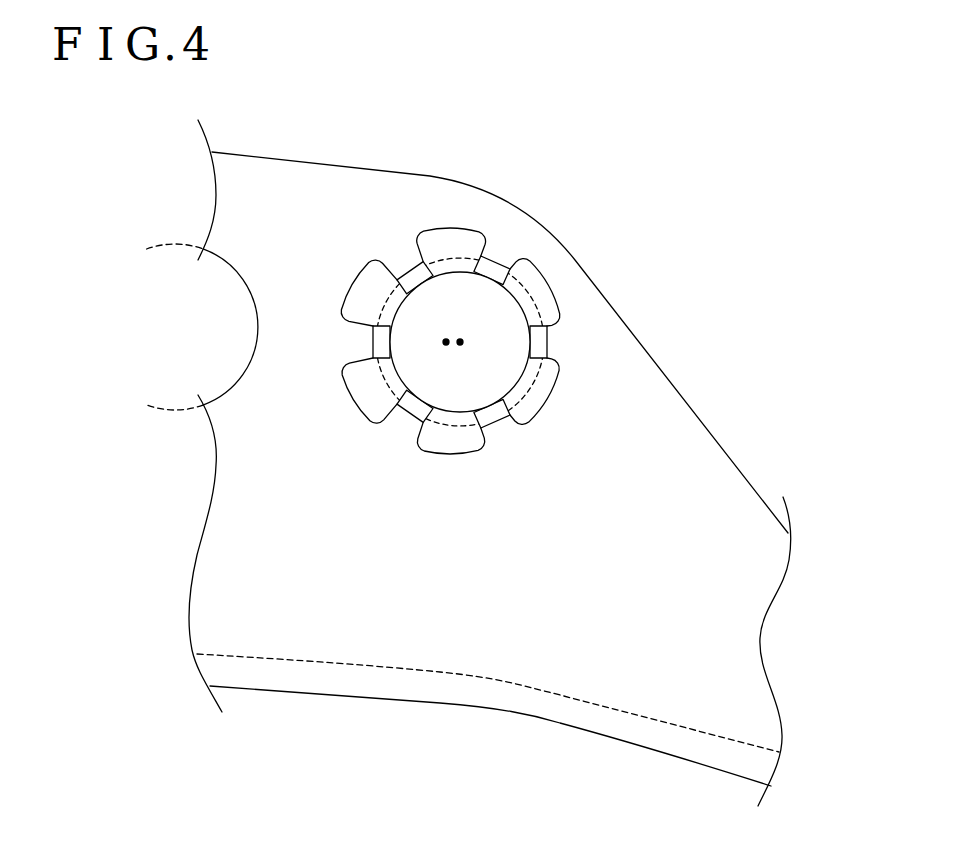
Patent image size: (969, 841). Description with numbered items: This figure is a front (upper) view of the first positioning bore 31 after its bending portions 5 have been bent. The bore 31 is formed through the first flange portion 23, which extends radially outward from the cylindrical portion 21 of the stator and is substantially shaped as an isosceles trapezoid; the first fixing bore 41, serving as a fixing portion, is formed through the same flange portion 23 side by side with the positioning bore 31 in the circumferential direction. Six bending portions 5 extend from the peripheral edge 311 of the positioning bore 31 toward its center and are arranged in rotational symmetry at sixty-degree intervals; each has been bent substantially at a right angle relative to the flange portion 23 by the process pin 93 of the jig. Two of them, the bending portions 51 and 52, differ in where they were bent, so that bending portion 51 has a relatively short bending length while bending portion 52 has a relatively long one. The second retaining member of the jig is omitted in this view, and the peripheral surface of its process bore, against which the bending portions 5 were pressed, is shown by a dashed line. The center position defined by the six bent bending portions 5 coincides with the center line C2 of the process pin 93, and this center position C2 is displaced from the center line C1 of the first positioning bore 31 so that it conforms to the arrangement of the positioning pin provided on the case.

The bending portions 5 is at (400, 262).
The bending portion 51 is at (548, 342).
The bending portion 52 is at (372, 343).
The cylindrical portion 21 is at (600, 733).
The first flange portion 23 is at (264, 195).
The first positioning bore 31 is at (443, 244).
The peripheral edge 311 is at (398, 256).
The first fixing bore 41 is at (236, 348).
The process pin 93 is at (470, 396).
The center line C1 is at (445, 345).
The center line C2 is at (461, 345).